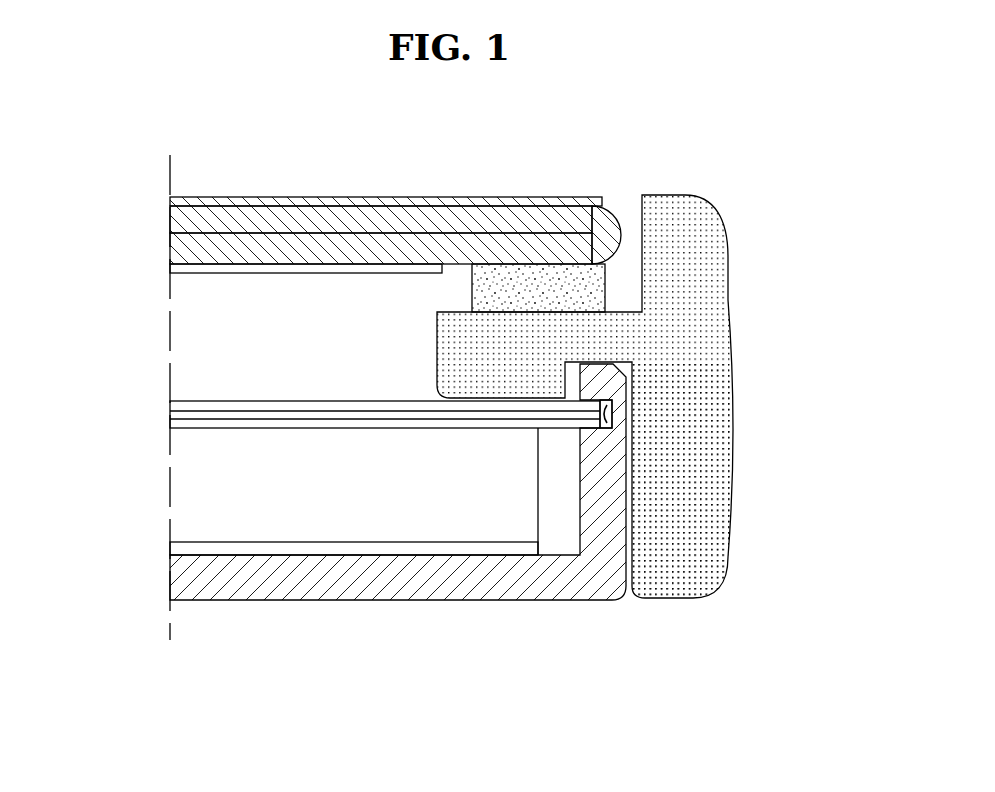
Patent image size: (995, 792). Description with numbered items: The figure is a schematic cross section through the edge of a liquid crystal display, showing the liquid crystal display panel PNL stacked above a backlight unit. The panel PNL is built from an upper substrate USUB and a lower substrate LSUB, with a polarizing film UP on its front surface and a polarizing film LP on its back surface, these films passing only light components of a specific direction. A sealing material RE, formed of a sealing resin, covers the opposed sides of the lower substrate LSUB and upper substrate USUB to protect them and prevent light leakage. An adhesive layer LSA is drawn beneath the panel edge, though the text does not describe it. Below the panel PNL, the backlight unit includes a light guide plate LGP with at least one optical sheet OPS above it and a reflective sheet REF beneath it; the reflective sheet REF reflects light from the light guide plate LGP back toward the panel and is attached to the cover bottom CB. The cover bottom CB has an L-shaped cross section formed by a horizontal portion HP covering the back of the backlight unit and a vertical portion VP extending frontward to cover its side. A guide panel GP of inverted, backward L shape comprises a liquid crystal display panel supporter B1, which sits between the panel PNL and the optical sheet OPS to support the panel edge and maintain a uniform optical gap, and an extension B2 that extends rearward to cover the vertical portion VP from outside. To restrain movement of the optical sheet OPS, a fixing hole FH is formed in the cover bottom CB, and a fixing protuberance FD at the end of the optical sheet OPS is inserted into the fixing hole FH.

The liquid crystal display panel PNL is at (314, 236).
The polarizing film UP is at (176, 201).
The upper substrate USUB is at (176, 227).
The lower substrate LSUB is at (176, 253).
The polarizing film LP is at (176, 269).
The sealing material RE is at (613, 222).
The light shielding adhesive LSA is at (533, 278).
The guide panel GP is at (658, 396).
The liquid crystal display panel supporter B1 is at (545, 333).
The extension B2 is at (703, 407).
The optical sheet OPS is at (163, 401).
The fixing hole FH is at (613, 411).
The fixing protuberance FD is at (588, 414).
The light guide plate LGP is at (177, 505).
The reflective sheet REF is at (177, 547).
The cover bottom CB is at (398, 538).
The horizontal portion HP is at (543, 590).
The vertical portion VP is at (597, 522).